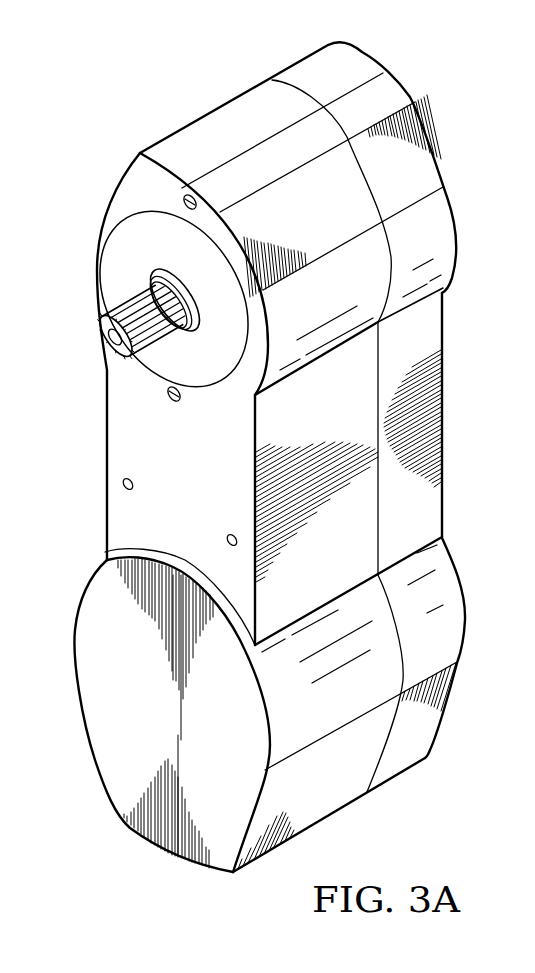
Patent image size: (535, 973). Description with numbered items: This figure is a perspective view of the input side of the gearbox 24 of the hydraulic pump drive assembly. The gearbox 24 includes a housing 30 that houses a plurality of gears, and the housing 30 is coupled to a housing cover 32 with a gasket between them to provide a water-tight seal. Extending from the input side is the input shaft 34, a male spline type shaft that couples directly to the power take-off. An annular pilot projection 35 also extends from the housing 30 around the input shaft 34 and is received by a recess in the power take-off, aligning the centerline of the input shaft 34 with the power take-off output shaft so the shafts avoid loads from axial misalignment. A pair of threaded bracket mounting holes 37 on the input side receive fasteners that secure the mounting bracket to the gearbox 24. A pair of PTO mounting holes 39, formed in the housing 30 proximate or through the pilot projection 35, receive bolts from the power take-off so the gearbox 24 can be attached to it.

The gearbox 24 is at (194, 60).
The housing 30 is at (100, 430).
The housing cover 32 is at (449, 327).
The input shaft 34 is at (101, 340).
The annular pilot projection 35 is at (120, 263).
The bracket mounting holes 37 is at (123, 484).
The PTO mounting holes 39 is at (184, 206).